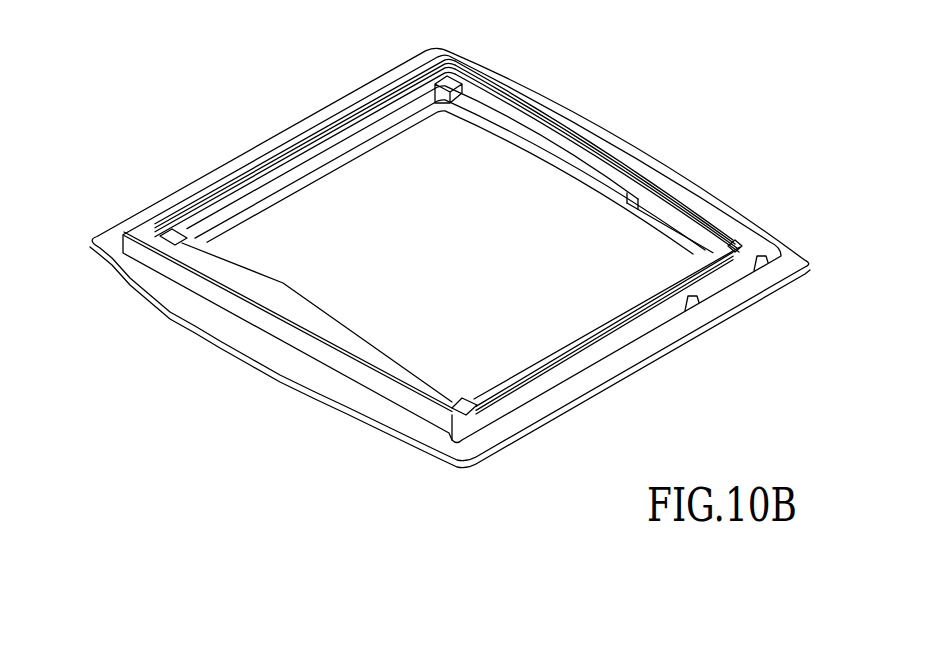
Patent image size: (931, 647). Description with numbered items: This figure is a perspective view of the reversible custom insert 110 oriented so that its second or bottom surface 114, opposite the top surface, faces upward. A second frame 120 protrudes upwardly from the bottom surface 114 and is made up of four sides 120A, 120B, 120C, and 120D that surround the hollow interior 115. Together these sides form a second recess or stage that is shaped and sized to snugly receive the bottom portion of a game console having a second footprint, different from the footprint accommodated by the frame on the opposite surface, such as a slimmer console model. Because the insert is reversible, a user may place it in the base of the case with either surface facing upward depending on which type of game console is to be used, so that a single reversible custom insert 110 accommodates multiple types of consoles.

The reversible custom insert 110 is at (676, 102).
The bottom surface 114 is at (207, 313).
The hollow interior 115 is at (440, 198).
The second frame 120 is at (478, 62).
The side of the second frame 120A is at (275, 150).
The side of the second frame 120B is at (660, 174).
The side of the second frame 120C is at (618, 305).
The side of the second frame 120D is at (267, 307).